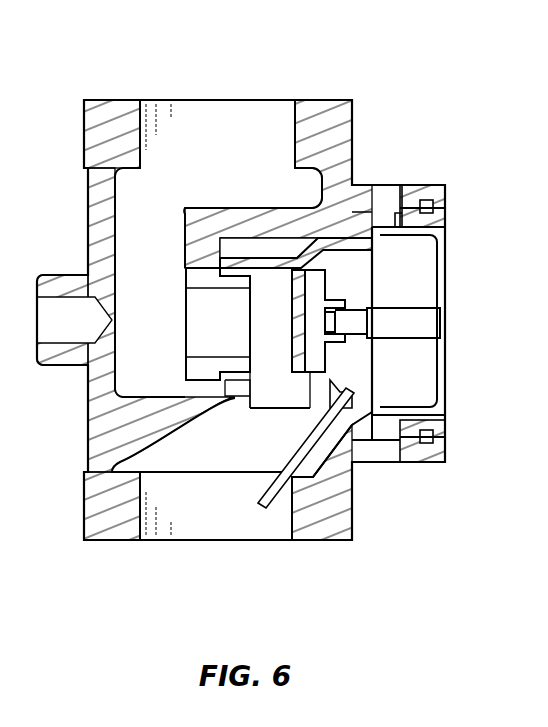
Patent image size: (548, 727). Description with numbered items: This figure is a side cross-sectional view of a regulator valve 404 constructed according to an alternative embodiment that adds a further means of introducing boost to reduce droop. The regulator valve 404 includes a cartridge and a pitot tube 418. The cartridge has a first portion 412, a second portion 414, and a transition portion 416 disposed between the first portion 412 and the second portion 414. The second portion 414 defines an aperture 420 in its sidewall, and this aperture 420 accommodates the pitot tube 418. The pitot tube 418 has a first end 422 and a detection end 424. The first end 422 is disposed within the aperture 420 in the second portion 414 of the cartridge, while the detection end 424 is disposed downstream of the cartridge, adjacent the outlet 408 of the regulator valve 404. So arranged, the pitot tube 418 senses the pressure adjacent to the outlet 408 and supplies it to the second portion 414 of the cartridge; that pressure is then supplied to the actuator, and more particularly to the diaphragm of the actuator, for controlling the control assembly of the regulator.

The regulator valve 404 is at (322, 95).
The outlet 408 is at (228, 512).
The first portion 412 is at (253, 262).
The second portion 414 is at (356, 243).
The transition portion 416 is at (298, 246).
The pitot tube 418 is at (320, 445).
The aperture 420 is at (342, 390).
The first end 422 is at (355, 463).
The detection end 424 is at (263, 512).